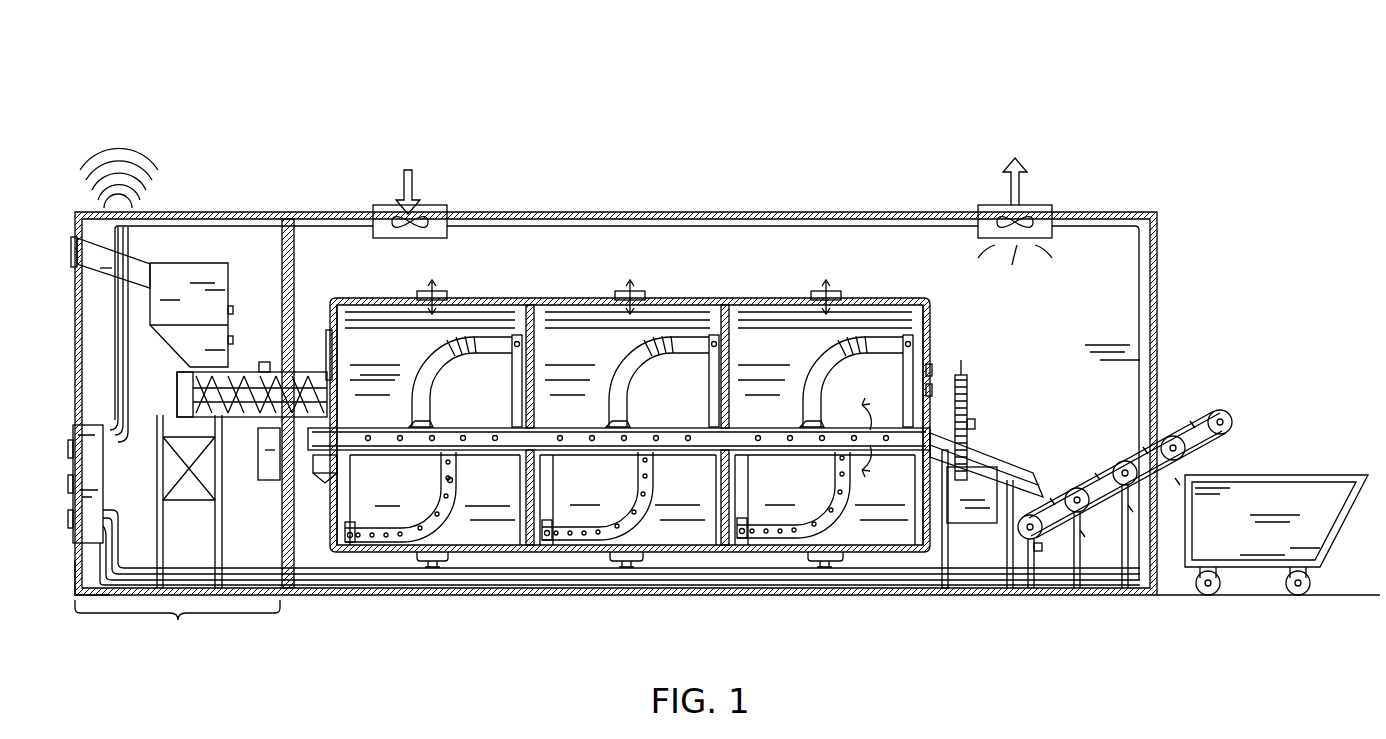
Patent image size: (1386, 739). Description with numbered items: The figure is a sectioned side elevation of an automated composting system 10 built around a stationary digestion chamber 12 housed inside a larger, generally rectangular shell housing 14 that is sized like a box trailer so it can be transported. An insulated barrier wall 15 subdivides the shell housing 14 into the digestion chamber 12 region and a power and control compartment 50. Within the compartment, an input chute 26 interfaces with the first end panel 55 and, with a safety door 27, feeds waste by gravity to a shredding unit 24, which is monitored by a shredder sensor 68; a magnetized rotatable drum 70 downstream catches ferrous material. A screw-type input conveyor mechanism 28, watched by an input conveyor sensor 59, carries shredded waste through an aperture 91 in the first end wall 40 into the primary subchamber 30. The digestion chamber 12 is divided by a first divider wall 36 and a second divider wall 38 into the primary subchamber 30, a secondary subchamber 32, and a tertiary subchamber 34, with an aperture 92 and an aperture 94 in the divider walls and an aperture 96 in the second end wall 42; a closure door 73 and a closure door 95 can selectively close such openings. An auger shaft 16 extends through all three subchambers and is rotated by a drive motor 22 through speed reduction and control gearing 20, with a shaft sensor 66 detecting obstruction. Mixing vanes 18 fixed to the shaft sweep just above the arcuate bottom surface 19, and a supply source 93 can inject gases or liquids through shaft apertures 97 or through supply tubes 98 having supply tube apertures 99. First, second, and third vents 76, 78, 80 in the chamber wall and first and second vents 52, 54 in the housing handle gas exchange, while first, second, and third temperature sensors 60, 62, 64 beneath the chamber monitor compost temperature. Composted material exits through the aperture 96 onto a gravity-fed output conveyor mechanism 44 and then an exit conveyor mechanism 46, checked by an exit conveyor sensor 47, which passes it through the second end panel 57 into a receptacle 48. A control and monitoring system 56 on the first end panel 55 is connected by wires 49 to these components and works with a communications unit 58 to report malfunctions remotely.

The composting system 10 is at (480, 102).
The digestion chamber 12 is at (576, 290).
The shell housing 14 is at (336, 600).
The insulated barrier wall 15 is at (282, 538).
The auger shaft 16 is at (682, 426).
The mixing vane 18 is at (628, 500).
The arcuate bottom surface 19 is at (665, 540).
The speed reduction and control gearing 20 is at (968, 382).
The drive motor 22 is at (962, 524).
The shredding unit 24 is at (212, 272).
The input chute 26 is at (132, 262).
The safety door 27 is at (72, 242).
The input conveyor mechanism 28 is at (238, 420).
The primary subchamber 30 is at (505, 318).
The secondary subchamber 32 is at (703, 318).
The tertiary subchamber 34 is at (902, 318).
The first divider wall 36 is at (531, 335).
The second divider wall 38 is at (728, 335).
The first end wall 40 is at (336, 308).
The second end wall 42 is at (930, 330).
The output conveyor mechanism 44 is at (1025, 456).
The exit conveyor mechanism 46 is at (1105, 465).
The exit conveyor sensor 47 is at (1043, 548).
The receptacle 48 is at (1290, 474).
The wires 49 is at (178, 566).
The power and control compartment 50 is at (177, 624).
The first vent 52 is at (430, 210).
The second vent 54 is at (1040, 210).
The first end panel 55 is at (76, 594).
The control and monitoring system 56 is at (74, 428).
The second end panel 57 is at (1137, 283).
The communications unit 58 is at (128, 210).
The input conveyor sensor 59 is at (264, 360).
The first temperature sensor 60 is at (428, 562).
The second temperature sensor 62 is at (620, 562).
The third temperature sensor 64 is at (833, 562).
The shaft sensor 66 is at (976, 422).
The shredder sensor 68 is at (234, 310).
The rotatable drum 70 is at (234, 340).
The closure door 73 is at (330, 350).
The first vent 76 is at (446, 292).
The second vent 78 is at (642, 292).
The third vent 80 is at (842, 292).
The aperture 91 is at (352, 382).
The aperture 92 is at (542, 382).
The supply source 93 is at (260, 474).
The aperture 94 is at (742, 382).
The closure door 95 is at (934, 368).
The aperture 96 is at (934, 390).
The shaft apertures 97 is at (378, 440).
The supply tubes 98 is at (438, 512).
The supply tube apertures 99 is at (456, 481).